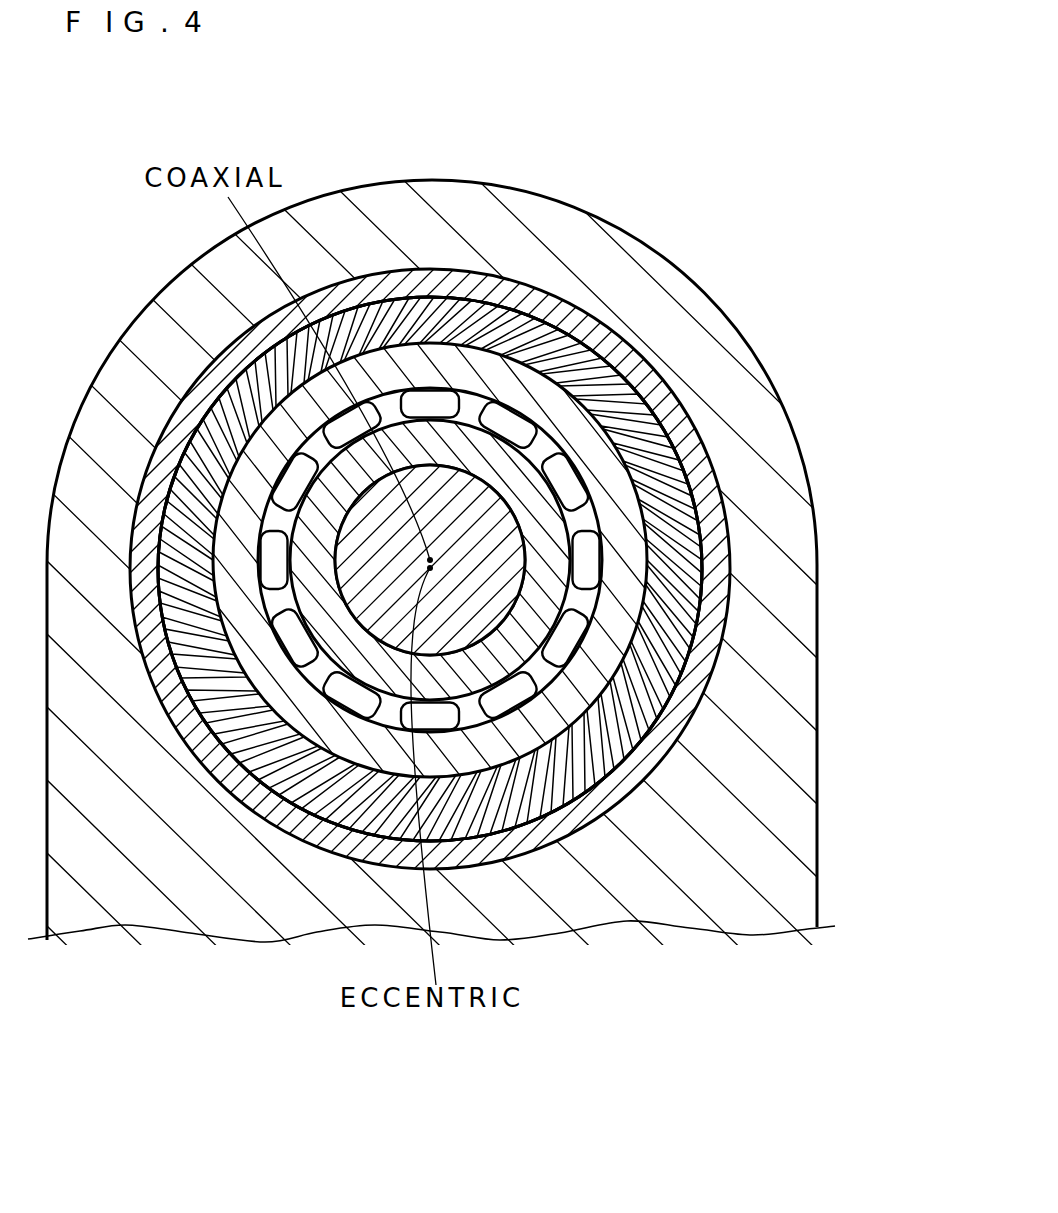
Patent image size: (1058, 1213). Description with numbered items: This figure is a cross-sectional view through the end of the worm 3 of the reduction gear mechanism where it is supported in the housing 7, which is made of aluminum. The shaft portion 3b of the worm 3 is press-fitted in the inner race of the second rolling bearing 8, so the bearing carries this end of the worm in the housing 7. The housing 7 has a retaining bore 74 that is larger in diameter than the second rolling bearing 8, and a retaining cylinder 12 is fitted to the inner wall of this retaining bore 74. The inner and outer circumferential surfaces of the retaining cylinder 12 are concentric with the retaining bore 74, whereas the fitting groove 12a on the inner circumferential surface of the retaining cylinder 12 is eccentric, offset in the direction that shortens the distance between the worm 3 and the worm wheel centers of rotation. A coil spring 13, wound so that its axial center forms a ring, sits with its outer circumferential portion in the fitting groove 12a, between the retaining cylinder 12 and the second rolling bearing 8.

The housing 7 is at (634, 241).
The retaining bore 74 is at (630, 360).
The retaining cylinder 12 is at (673, 394).
The fitting groove 12a is at (690, 460).
The second rolling bearing 8 is at (638, 543).
The coil spring 13 is at (685, 598).
The shaft portion 3b is at (478, 613).
The worm 3 is at (430, 560).